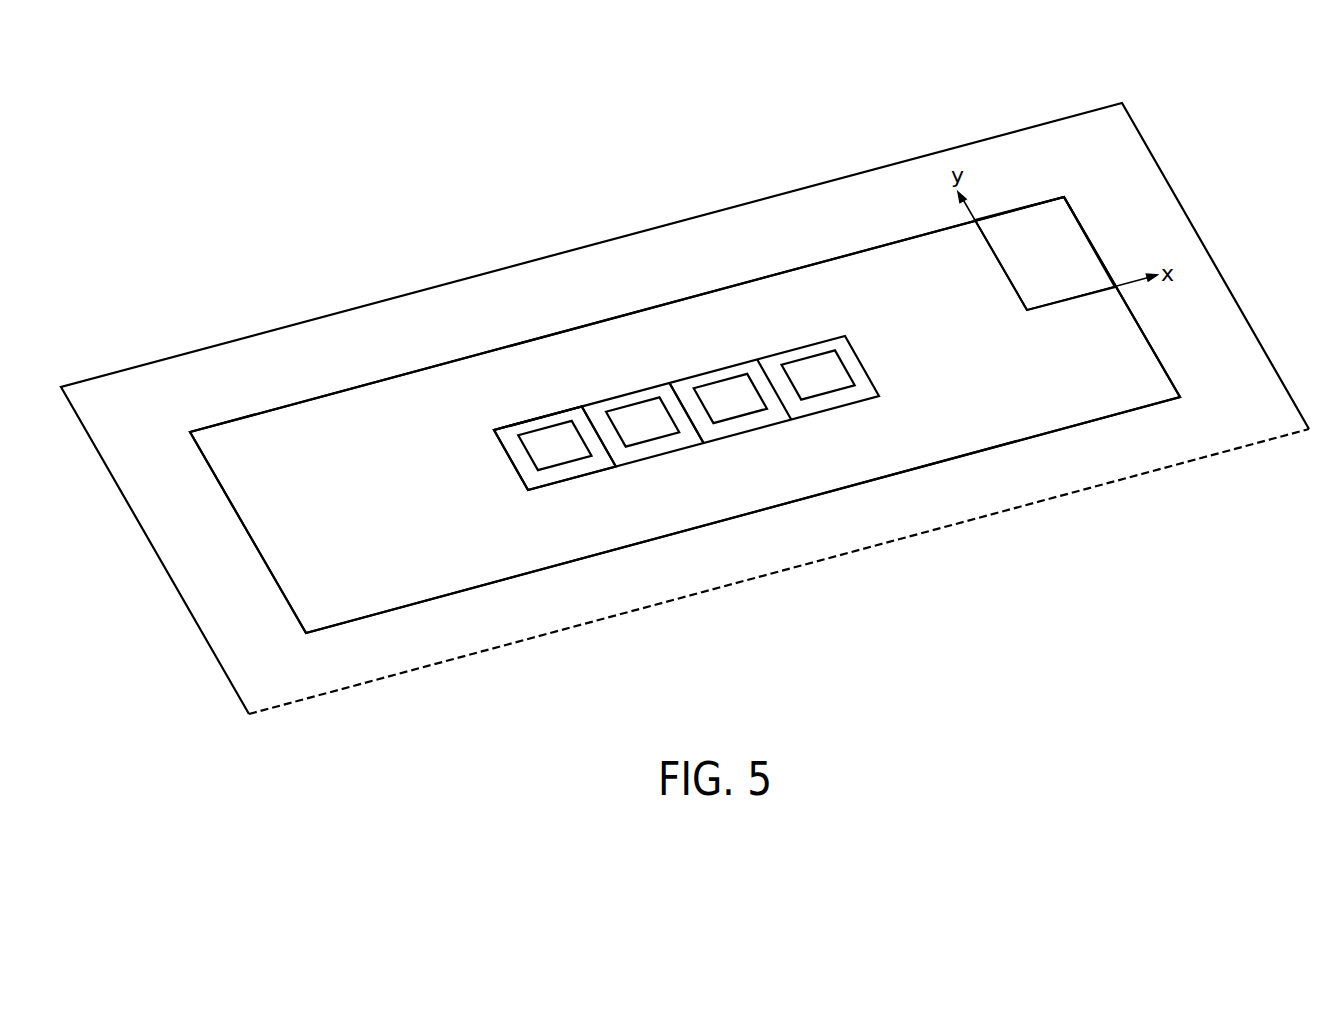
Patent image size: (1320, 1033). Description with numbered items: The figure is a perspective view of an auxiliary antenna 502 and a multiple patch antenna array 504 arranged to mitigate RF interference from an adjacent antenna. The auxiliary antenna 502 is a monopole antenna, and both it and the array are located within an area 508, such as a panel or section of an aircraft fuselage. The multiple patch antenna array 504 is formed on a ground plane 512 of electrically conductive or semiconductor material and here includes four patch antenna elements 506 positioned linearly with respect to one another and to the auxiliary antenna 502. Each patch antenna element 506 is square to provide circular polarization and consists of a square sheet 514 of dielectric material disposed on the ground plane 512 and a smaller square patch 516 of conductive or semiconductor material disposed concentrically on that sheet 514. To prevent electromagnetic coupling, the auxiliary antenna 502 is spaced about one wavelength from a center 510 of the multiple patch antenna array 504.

The auxiliary antenna 502 is at (323, 507).
The multiple patch antenna array 504 is at (708, 410).
The patch antenna element 506 is at (522, 492).
The area 508 is at (322, 318).
The center 510 is at (686, 408).
The ground plane 512 is at (437, 365).
The sheet of dielectric material 514 is at (517, 423).
The patch 516 is at (532, 450).